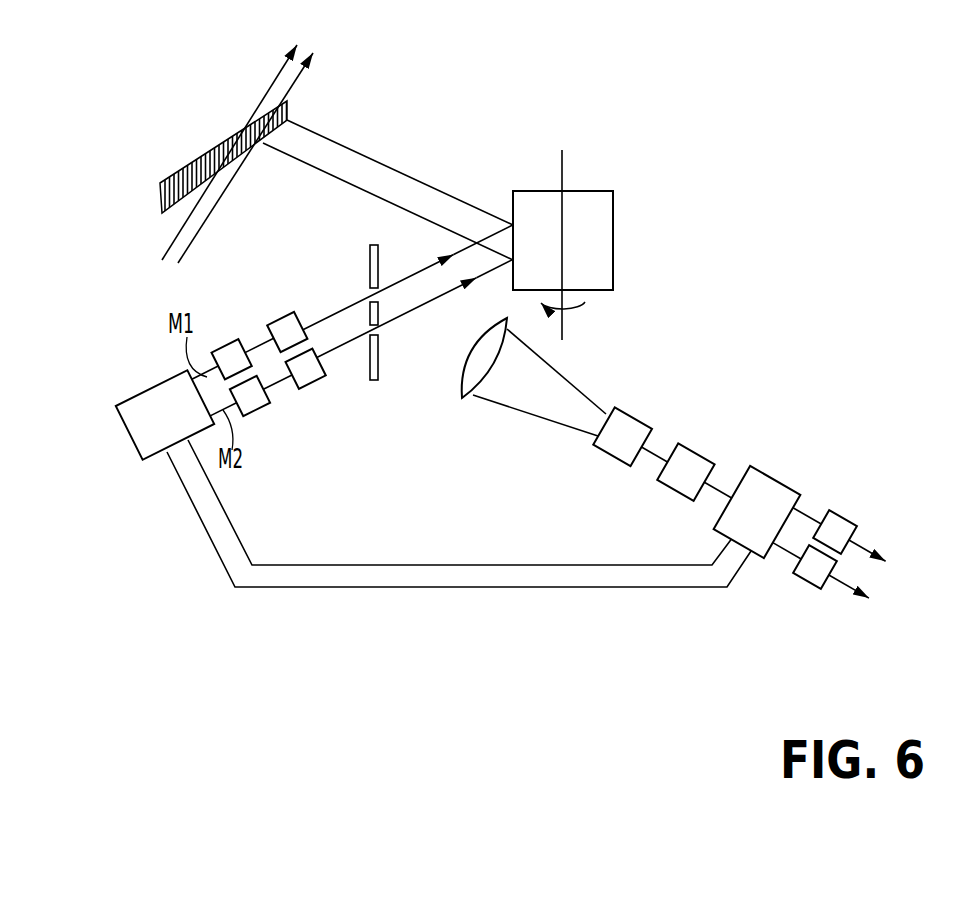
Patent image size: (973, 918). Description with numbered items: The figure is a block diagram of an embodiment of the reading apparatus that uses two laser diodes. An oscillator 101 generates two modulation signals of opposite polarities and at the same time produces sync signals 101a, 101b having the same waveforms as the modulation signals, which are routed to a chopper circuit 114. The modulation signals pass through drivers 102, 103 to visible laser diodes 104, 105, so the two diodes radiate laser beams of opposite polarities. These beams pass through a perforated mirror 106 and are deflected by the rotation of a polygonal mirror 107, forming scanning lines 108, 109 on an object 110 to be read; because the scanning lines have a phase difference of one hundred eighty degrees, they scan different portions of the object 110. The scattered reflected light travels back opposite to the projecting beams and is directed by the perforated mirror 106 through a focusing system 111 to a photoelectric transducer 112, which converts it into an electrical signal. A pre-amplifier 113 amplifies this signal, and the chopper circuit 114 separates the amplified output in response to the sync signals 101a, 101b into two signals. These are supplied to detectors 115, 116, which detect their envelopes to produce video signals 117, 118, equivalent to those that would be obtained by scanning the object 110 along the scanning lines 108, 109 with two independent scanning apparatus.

The oscillator 101 is at (118, 425).
The sync signal 101a is at (513, 565).
The sync signal 101b is at (510, 587).
The driver 102 is at (230, 340).
The driver 103 is at (263, 412).
The visible laser diode 104 is at (290, 312).
The visible laser diode 105 is at (318, 384).
The perforated mirror 106 is at (378, 358).
The polygonal mirror 107 is at (613, 232).
The scanning line 108 is at (223, 198).
The scanning line 109 is at (172, 241).
The object 110 is at (176, 171).
The focusing system 111 is at (458, 384).
The photoelectric transducer 112 is at (632, 407).
The pre-amplifier 113 is at (698, 440).
The chopper circuit 114 is at (768, 470).
The detector 115 is at (846, 513).
The detector 116 is at (803, 587).
The video signal 117 is at (883, 561).
The video signal 118 is at (863, 598).